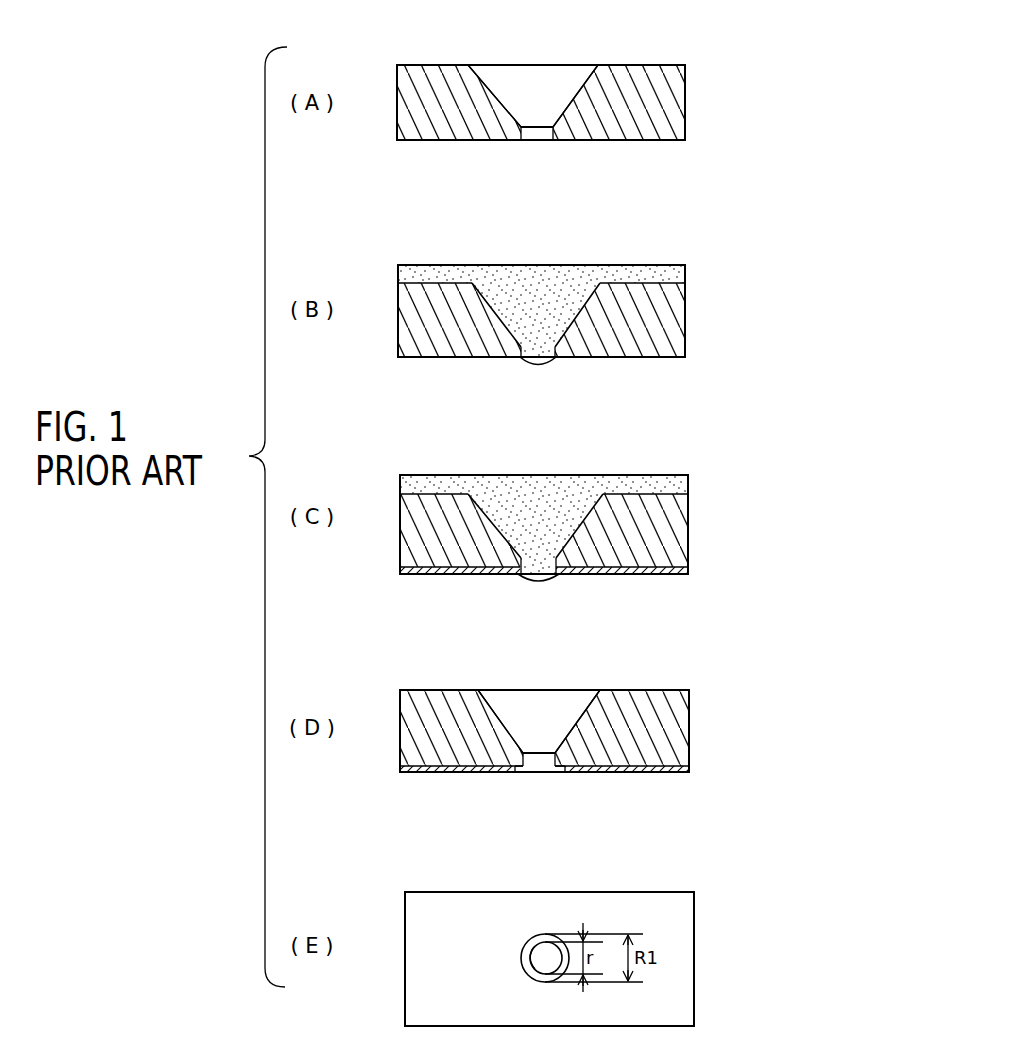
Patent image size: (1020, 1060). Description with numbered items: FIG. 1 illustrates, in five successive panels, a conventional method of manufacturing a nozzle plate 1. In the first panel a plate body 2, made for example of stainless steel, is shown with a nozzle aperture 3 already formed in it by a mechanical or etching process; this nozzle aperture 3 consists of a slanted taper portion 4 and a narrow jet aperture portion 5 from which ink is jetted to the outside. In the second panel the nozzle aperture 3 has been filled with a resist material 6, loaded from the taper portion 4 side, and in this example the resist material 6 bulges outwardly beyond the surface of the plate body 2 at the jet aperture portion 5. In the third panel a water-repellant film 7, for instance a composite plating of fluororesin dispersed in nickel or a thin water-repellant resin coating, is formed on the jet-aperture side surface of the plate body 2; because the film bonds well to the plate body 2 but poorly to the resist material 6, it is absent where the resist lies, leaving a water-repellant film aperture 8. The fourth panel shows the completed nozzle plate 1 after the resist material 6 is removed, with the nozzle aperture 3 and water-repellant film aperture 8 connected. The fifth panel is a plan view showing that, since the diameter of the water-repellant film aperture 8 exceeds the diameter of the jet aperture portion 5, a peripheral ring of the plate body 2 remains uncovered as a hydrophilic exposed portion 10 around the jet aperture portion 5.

The nozzle plate 1 is at (689, 688).
The plate body 2 is at (679, 727).
The nozzle aperture 3 is at (548, 88).
The taper portion 4 is at (489, 90).
The jet aperture portion 5 is at (547, 139).
The resist material 6 is at (547, 279).
The water-repellant film 7 is at (445, 575).
The water-repellant film aperture 8 is at (517, 769).
The exposed portion 10 is at (538, 979).